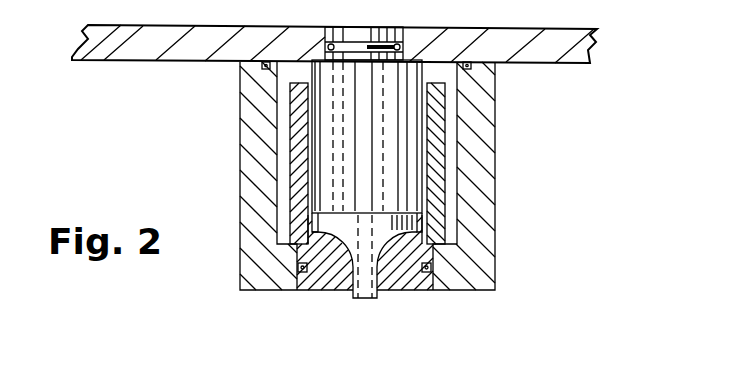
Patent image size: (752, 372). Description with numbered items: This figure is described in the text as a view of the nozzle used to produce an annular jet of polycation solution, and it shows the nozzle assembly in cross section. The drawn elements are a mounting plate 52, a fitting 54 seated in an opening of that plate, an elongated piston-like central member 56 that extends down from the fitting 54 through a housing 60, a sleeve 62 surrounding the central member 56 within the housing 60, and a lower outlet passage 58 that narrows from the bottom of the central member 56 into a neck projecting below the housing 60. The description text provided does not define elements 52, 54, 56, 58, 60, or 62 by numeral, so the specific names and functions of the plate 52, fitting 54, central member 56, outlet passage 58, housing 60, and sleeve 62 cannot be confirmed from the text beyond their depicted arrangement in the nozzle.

The mounting plate 52 is at (142, 62).
The threaded fitting 54 is at (372, 27).
The piston 56 is at (347, 138).
The outlet passage 58 is at (366, 298).
The housing 60 is at (258, 220).
The sleeve 62 is at (290, 68).